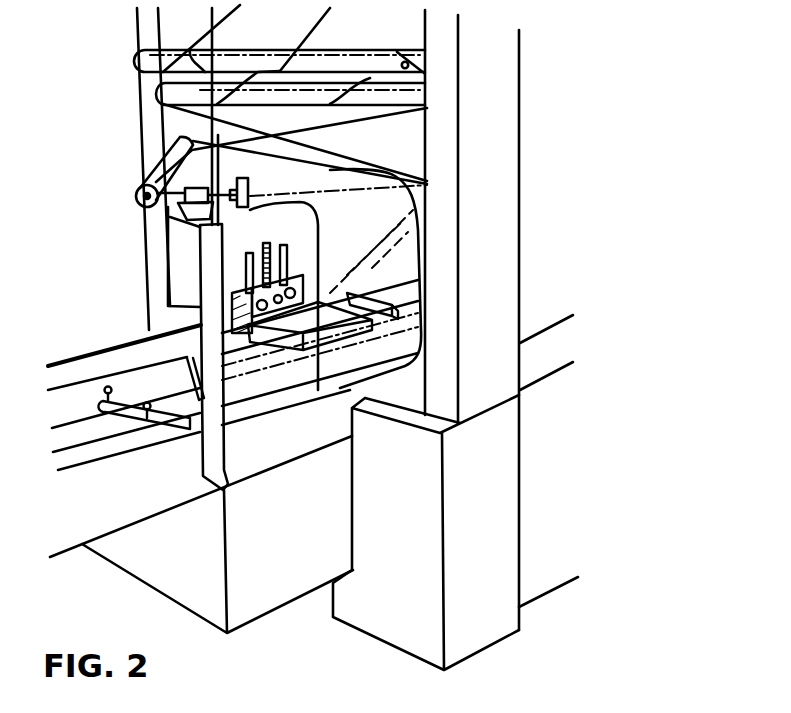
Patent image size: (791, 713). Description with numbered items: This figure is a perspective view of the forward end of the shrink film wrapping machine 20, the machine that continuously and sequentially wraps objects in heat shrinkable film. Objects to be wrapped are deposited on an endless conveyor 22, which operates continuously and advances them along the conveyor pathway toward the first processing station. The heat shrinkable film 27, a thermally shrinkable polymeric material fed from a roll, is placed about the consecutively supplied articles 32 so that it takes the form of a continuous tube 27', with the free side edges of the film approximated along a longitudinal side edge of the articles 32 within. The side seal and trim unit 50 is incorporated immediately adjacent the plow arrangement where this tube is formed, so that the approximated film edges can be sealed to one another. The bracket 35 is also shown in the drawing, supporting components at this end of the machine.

The shrink film wrapping machine 20 is at (545, 172).
The endless conveyor 22 is at (303, 325).
The heat shrinkable film 27 is at (378, 279).
The continuous tube 27' is at (320, 429).
The articles 32 is at (301, 323).
The bracket 35 is at (203, 427).
The side seal and trim unit 50 is at (240, 275).